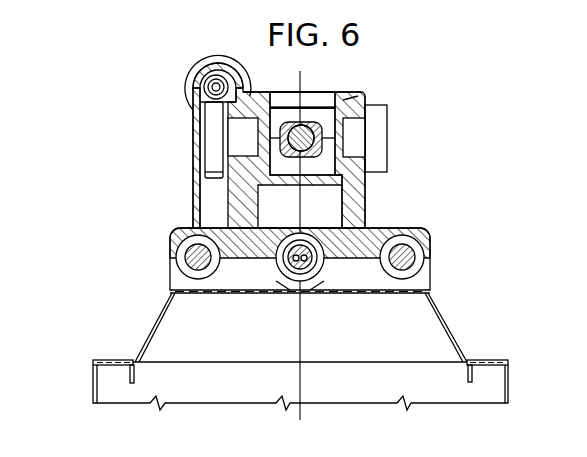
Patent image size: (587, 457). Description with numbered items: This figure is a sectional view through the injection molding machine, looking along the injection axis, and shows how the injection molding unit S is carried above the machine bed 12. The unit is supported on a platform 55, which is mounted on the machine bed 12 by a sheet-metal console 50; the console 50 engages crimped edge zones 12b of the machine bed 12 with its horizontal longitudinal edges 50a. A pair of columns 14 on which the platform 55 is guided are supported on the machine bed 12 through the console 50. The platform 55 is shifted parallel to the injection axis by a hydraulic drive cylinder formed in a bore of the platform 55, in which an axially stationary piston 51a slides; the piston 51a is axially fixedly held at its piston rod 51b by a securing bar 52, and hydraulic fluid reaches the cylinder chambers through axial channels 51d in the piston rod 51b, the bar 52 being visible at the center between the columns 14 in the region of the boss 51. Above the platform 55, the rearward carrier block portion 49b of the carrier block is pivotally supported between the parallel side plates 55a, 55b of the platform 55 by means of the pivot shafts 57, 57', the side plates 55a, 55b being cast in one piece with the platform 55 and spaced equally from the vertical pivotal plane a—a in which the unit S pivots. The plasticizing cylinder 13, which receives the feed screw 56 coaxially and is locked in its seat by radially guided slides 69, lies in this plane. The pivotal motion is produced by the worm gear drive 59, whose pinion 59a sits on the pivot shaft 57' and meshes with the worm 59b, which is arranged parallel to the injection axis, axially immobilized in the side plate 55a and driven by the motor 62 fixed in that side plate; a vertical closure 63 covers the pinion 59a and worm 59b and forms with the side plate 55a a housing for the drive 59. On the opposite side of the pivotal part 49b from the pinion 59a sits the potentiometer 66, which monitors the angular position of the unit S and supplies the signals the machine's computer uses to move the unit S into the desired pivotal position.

The injection molding unit S is at (70, 89).
The vertical pivotal plane a is at (301, 245).
The machine bed 12 is at (280, 395).
The crimped edge zones 12b is at (489, 365).
The plasticizing cylinder 13 is at (307, 145).
The columns 14 is at (186, 258).
The rearward carrier block portion 49b is at (344, 93).
The console 50 is at (424, 320).
The horizontal longitudinal edges 50a is at (489, 362).
The central boss 51 is at (268, 275).
The piston 51a is at (287, 288).
The piston rod 51b is at (315, 290).
The axial channels 51d is at (298, 246).
The securing bar 52 is at (421, 282).
The platform 55 is at (398, 224).
The side plate 55a is at (195, 197).
The side plate 55b is at (366, 181).
The feed screw 56 is at (313, 157).
The pivot shaft 57 is at (394, 141).
The pivot shaft 57' is at (175, 140).
The worm gear drive 59 is at (188, 132).
The pinion 59a is at (212, 112).
The worm 59b is at (203, 64).
The motor 62 is at (187, 83).
The closure 63 is at (195, 164).
The potentiometer 66 is at (377, 140).
The slides 69 is at (345, 107).